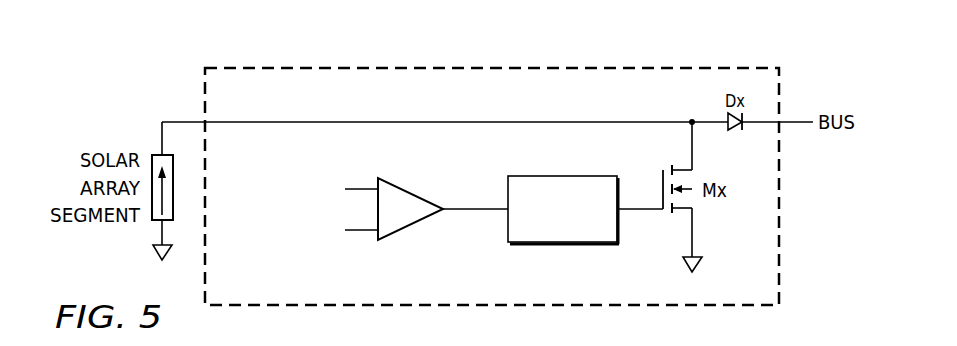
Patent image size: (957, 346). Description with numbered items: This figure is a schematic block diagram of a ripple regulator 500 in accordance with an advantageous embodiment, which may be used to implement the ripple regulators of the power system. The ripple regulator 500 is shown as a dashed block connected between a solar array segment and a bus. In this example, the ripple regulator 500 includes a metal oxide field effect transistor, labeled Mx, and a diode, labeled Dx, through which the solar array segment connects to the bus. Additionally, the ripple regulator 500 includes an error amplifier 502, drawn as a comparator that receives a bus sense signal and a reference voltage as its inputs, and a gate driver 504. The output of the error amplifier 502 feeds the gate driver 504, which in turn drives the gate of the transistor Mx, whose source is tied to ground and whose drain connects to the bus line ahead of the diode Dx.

The ripple regulator 500 is at (783, 195).
The error amplifier 502 is at (412, 191).
The gate driver 504 is at (568, 243).